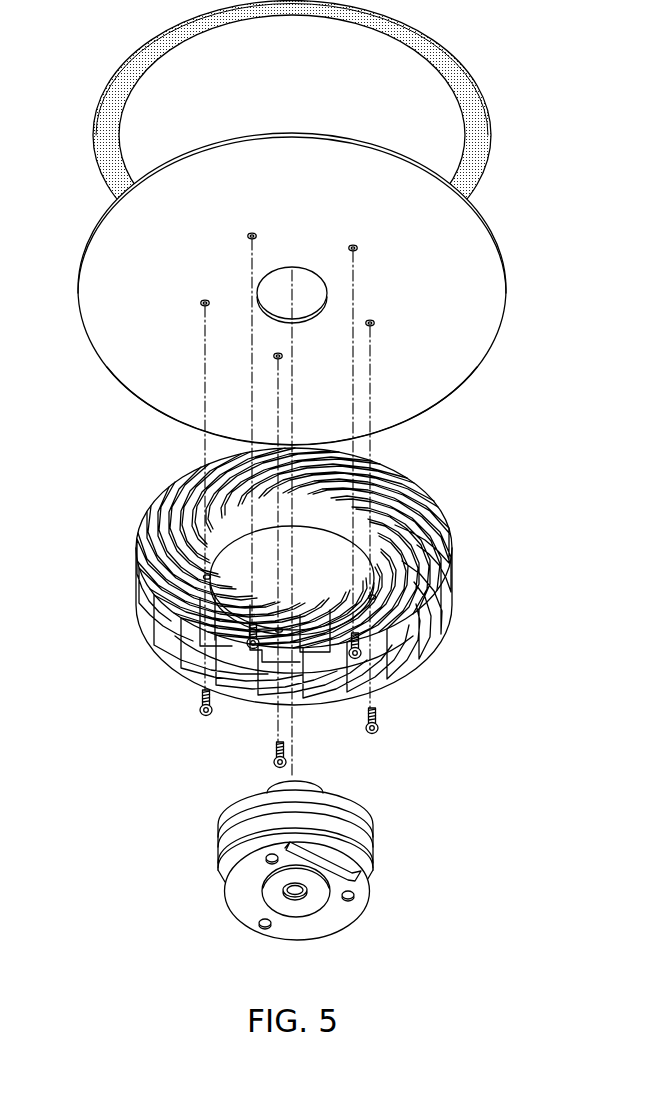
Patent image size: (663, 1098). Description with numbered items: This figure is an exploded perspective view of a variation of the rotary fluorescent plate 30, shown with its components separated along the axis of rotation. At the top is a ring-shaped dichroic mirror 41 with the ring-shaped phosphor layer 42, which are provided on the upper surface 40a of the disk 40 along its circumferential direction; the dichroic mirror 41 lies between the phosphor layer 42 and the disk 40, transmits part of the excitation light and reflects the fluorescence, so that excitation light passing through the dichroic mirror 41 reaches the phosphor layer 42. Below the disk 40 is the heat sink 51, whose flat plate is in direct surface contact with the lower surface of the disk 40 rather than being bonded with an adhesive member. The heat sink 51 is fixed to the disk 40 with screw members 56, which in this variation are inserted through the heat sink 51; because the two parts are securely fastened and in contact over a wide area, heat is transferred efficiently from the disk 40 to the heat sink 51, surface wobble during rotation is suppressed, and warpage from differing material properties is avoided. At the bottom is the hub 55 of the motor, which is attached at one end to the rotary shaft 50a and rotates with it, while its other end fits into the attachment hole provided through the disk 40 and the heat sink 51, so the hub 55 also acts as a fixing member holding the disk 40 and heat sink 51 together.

The rotary fluorescent plate 30 is at (309, 474).
The disk 40 is at (297, 289).
The upper surface 40a is at (150, 380).
The dichroic mirror 41 is at (335, 134).
The phosphor layer 42 is at (485, 163).
The heat sink 51 is at (445, 645).
The hub 55 is at (281, 865).
The rotary shaft 50a is at (297, 903).
The screw members 56 is at (380, 714).